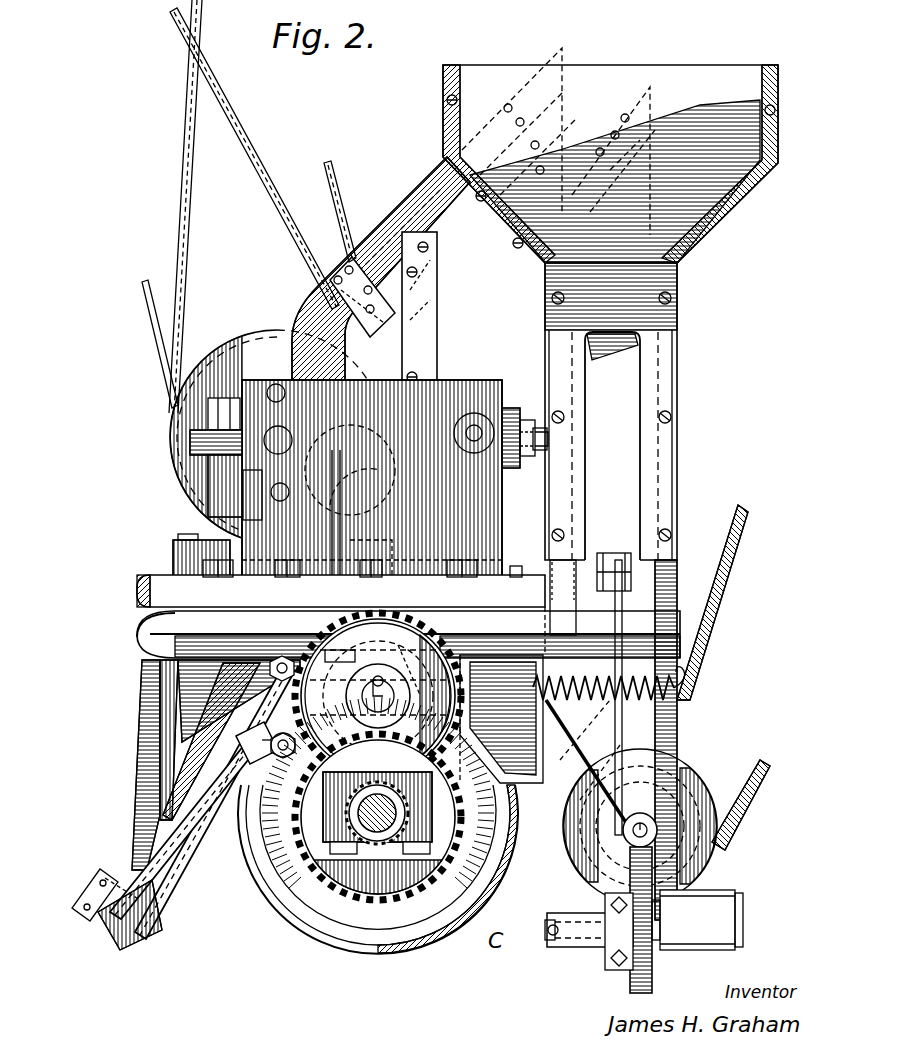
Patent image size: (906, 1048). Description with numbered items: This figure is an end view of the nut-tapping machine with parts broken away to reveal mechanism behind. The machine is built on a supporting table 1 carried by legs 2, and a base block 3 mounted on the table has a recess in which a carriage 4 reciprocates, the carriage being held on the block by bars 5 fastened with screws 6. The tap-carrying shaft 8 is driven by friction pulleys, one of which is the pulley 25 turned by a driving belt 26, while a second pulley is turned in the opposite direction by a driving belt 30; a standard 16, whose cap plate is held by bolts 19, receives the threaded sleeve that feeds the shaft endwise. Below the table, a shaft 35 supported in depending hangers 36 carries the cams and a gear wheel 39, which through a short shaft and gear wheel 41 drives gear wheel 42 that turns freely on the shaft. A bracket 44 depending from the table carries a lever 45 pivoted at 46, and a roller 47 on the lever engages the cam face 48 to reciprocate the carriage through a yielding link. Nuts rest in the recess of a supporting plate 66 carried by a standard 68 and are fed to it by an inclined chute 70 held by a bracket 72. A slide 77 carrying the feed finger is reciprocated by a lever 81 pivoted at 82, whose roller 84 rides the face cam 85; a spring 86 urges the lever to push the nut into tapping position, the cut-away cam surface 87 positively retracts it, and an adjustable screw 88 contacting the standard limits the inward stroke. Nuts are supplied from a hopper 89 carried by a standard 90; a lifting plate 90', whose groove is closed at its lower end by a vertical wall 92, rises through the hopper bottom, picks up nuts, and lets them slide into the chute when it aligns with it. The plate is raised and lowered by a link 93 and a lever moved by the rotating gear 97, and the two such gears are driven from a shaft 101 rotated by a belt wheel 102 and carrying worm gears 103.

The supporting table 1 is at (135, 638).
The legs 2 is at (188, 687).
The base block 3 is at (150, 625).
The carriage 4 is at (203, 578).
The bars 5 is at (203, 576).
The screws 6 is at (175, 548).
The shaft 8 is at (228, 432).
The standard 16 is at (205, 458).
The bolts 19 is at (222, 395).
The pulley 25 is at (272, 340).
The driving belt 26 is at (332, 172).
The driving belt 30 is at (188, 248).
The shaft 35 is at (350, 835).
The hangers 36 is at (333, 800).
The gear wheel 39 is at (385, 905).
The gear wheel 41 is at (340, 635).
The gear wheel 42 is at (355, 845).
The bracket 44 is at (147, 727).
The lever 45 is at (193, 822).
The pivot 46 is at (97, 877).
The roller 47 is at (238, 762).
The cam face 48 is at (452, 930).
The supporting plate 66 is at (243, 490).
The standard 68 is at (173, 533).
The inclined chute 70 is at (406, 210).
The bracket 72 is at (423, 300).
The slide 77 is at (513, 410).
The lever 81 is at (483, 532).
The pivot 82 is at (505, 748).
The roller 84 is at (247, 782).
The face cam 85 is at (397, 893).
The spring 86 is at (680, 693).
The cut-away cam surface 87 is at (378, 735).
The adjustable screw 88 is at (548, 437).
The hopper 89 is at (707, 74).
The standard 90 is at (657, 591).
The lifting plate 90' is at (670, 446).
The vertical wall 92 is at (567, 102).
The link 93 is at (620, 743).
The rotating gear 97 is at (630, 990).
The shaft 101 is at (628, 833).
The belt wheel 102 is at (687, 780).
The worm gears 103 is at (627, 848).